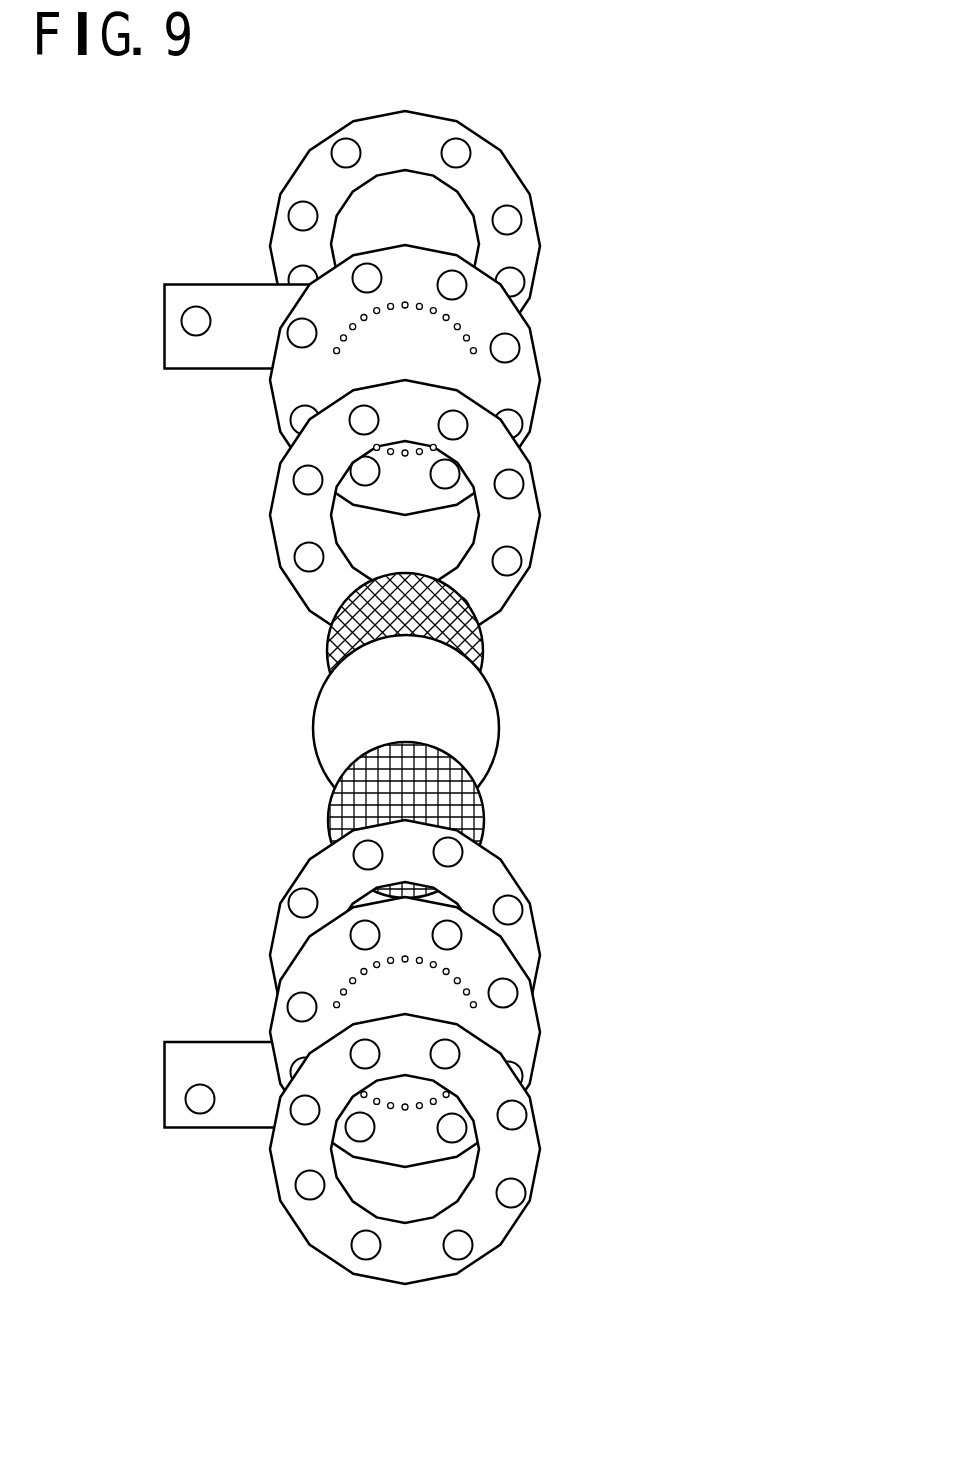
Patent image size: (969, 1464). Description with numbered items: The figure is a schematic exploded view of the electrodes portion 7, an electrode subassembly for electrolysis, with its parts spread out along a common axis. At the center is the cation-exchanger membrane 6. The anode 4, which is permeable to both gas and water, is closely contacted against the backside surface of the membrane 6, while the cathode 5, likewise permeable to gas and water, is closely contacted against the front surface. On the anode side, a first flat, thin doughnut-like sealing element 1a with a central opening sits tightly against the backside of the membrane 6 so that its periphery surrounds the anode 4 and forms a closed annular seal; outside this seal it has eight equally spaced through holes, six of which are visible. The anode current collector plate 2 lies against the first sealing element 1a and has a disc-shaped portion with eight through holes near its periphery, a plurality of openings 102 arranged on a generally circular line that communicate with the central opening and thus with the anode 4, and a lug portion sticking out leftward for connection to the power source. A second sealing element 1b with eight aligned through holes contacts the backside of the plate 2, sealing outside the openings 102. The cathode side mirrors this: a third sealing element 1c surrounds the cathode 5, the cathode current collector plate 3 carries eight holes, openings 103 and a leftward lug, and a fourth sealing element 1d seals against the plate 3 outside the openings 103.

The electrodes portion 7 is at (389, 700).
The first sealing element 1a is at (512, 515).
The second sealing element 1b is at (493, 168).
The third sealing element 1c is at (493, 885).
The fourth sealing element 1d is at (522, 1162).
The anode current collector plate 2 is at (417, 364).
The cathode current collector plate 3 is at (518, 1031).
The anode 4 is at (335, 633).
The cathode 5 is at (333, 822).
The cation-exchanger membrane 6 is at (325, 718).
The openings 102 is at (353, 326).
The openings 103 is at (353, 980).